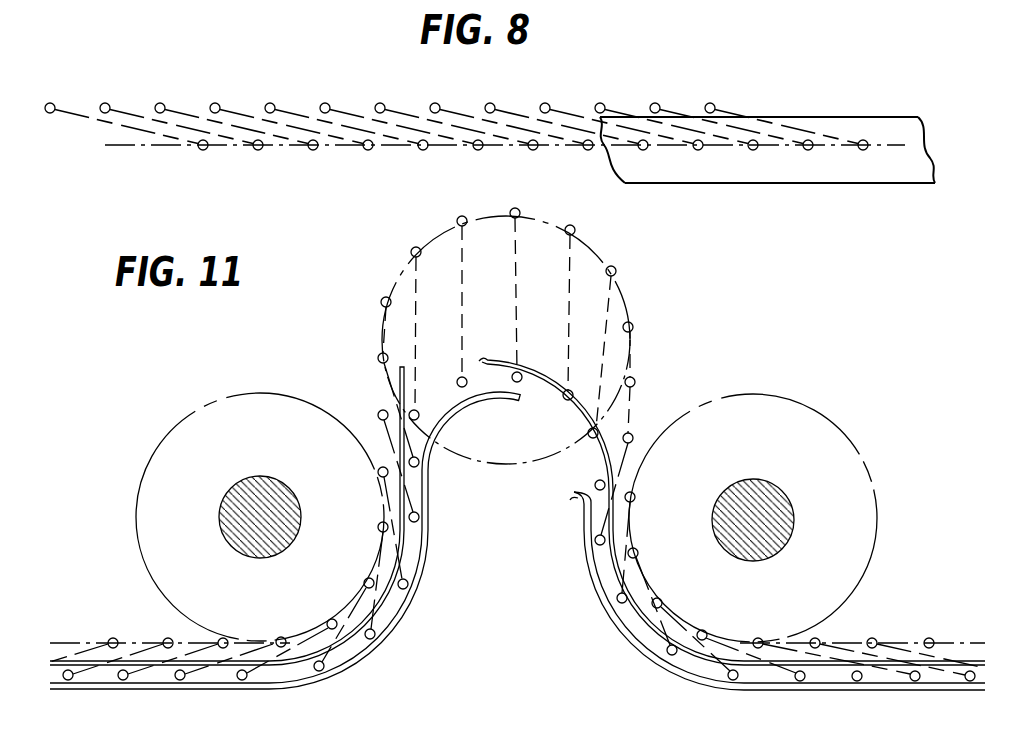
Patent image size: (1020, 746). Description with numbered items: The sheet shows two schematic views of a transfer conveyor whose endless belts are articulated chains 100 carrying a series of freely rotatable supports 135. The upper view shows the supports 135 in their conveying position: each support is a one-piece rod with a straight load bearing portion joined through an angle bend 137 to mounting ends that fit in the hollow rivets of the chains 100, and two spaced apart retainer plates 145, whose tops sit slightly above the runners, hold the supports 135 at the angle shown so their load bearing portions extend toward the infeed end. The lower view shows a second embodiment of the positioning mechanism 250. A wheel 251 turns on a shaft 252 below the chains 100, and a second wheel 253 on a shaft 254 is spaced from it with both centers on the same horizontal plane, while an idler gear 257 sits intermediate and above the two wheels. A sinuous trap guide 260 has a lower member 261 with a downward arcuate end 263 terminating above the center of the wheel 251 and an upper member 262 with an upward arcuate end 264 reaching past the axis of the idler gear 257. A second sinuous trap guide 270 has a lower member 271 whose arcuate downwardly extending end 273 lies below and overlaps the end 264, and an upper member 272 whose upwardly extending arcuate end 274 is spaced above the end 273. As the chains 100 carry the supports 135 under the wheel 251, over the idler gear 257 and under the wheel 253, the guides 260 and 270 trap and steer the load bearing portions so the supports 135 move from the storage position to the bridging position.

In FIG. 11, the chains 100 is at (900, 645).
In FIG. 8, the supports 135 is at (675, 102).
In FIG. 11, the supports 135 is at (877, 643).
In FIG. 8, the angle bend 137 is at (236, 107).
In FIG. 8, the retainer plates 145 is at (863, 172).
In FIG. 11, the positioning mechanism 250 is at (348, 281).
In FIG. 11, the wheel 251 is at (848, 442).
In FIG. 11, the shaft 252 is at (777, 533).
In FIG. 11, the second wheel 253 is at (173, 428).
In FIG. 11, the shaft 254 is at (282, 506).
In FIG. 11, the idler gear 257 is at (497, 467).
In FIG. 11, the sinuous trap guide 260 is at (878, 690).
In FIG. 11, the lower member 261 is at (765, 687).
In FIG. 11, the upper member 262 is at (707, 660).
In FIG. 11, the downward arcuate end 263 is at (577, 497).
In FIG. 11, the upward arcuate end 264 is at (498, 362).
In FIG. 11, the sinuous trap guide 270 is at (372, 647).
In FIG. 11, the lower member 271 is at (282, 686).
In FIG. 11, the upper member 272 is at (340, 645).
In FIG. 11, the arcuate downwardly extending end 273 is at (512, 398).
In FIG. 11, the upwardly extending arcuate end 274 is at (407, 383).